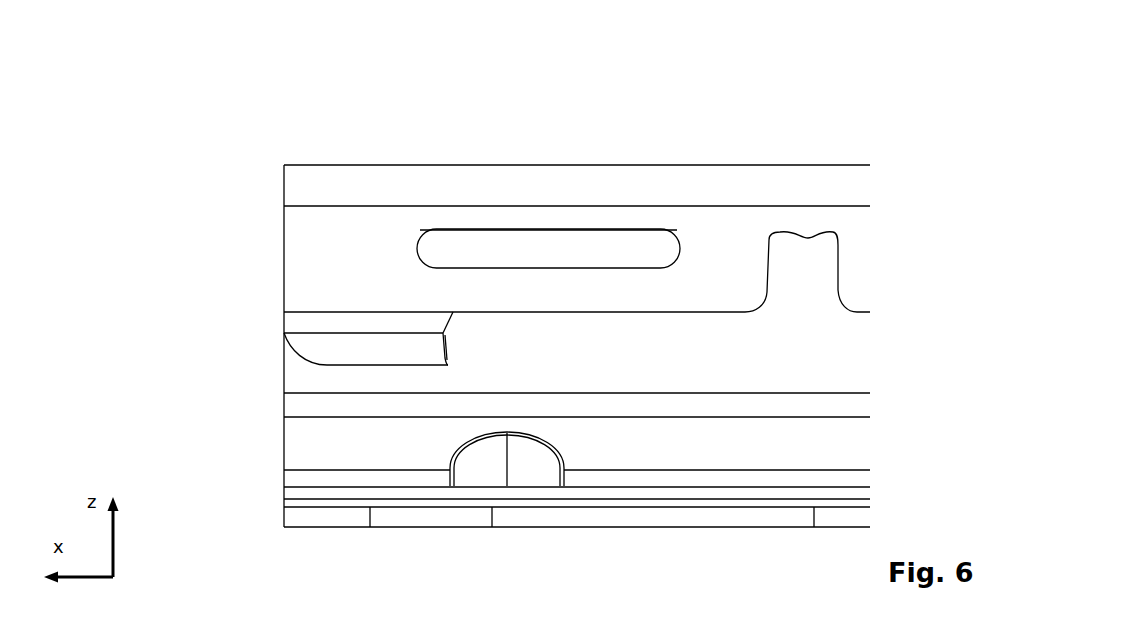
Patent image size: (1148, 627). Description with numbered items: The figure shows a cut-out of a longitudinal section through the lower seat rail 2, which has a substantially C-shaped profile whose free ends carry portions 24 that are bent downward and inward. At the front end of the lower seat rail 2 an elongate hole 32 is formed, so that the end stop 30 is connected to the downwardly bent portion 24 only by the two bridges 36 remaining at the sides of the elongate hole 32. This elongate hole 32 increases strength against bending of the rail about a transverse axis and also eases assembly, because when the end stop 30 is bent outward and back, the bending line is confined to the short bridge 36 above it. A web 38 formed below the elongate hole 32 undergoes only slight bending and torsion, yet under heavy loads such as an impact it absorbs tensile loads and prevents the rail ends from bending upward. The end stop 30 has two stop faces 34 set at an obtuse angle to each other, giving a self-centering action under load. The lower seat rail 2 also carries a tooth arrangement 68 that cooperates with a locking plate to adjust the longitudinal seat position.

The lower seat rail 2 is at (606, 97).
The downwardly bent portion 24 is at (320, 247).
The end stop 30 is at (355, 346).
The elongate hole 32 is at (453, 246).
The stop face 34 is at (447, 342).
The bridge 36 is at (375, 247).
The web 38 is at (555, 295).
The tooth arrangement 68 is at (858, 257).